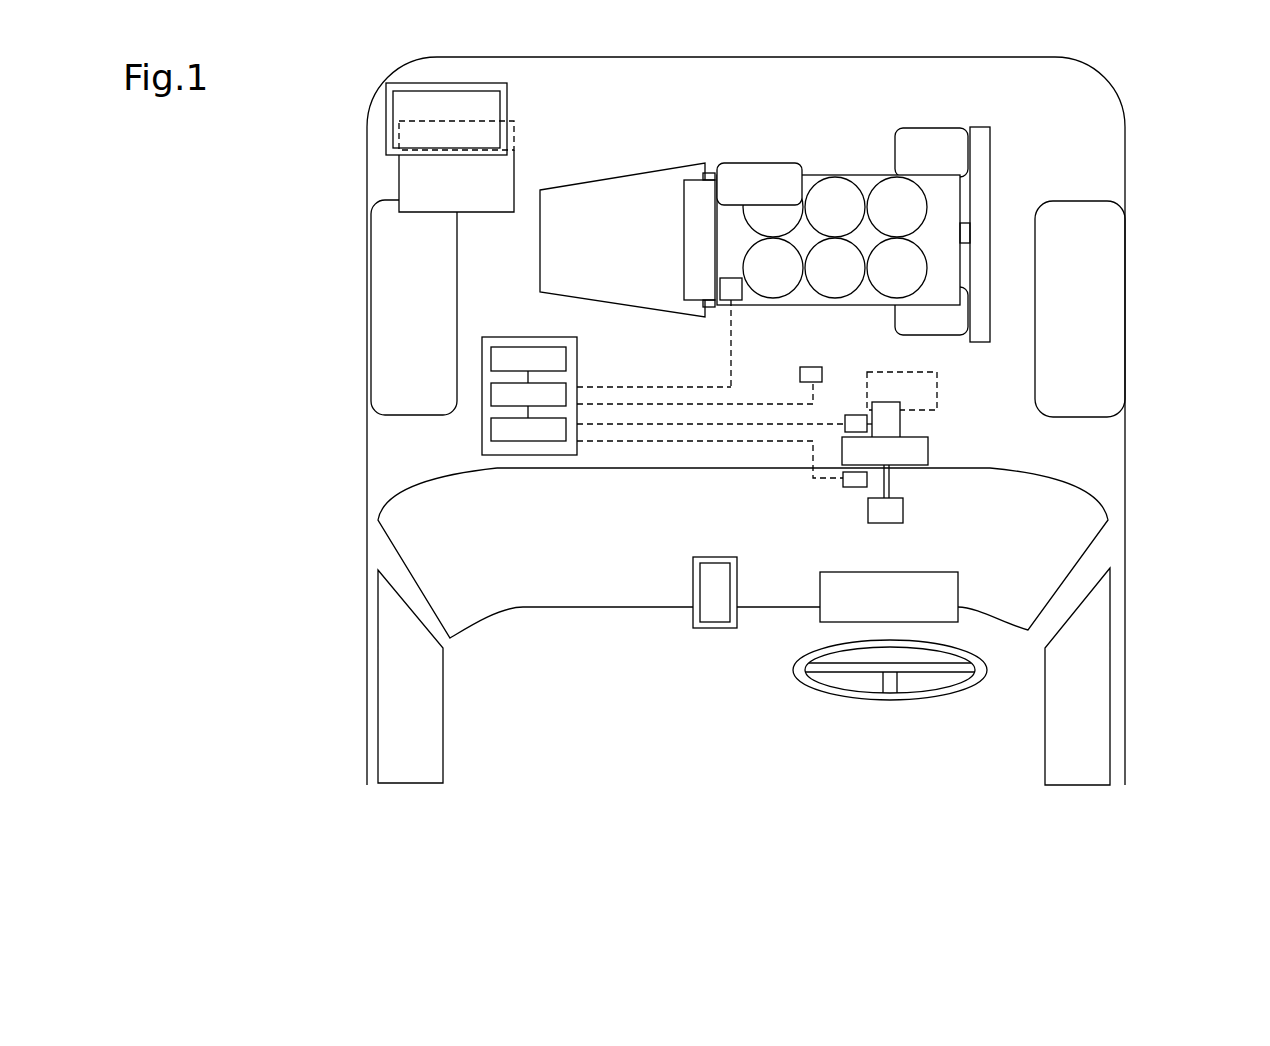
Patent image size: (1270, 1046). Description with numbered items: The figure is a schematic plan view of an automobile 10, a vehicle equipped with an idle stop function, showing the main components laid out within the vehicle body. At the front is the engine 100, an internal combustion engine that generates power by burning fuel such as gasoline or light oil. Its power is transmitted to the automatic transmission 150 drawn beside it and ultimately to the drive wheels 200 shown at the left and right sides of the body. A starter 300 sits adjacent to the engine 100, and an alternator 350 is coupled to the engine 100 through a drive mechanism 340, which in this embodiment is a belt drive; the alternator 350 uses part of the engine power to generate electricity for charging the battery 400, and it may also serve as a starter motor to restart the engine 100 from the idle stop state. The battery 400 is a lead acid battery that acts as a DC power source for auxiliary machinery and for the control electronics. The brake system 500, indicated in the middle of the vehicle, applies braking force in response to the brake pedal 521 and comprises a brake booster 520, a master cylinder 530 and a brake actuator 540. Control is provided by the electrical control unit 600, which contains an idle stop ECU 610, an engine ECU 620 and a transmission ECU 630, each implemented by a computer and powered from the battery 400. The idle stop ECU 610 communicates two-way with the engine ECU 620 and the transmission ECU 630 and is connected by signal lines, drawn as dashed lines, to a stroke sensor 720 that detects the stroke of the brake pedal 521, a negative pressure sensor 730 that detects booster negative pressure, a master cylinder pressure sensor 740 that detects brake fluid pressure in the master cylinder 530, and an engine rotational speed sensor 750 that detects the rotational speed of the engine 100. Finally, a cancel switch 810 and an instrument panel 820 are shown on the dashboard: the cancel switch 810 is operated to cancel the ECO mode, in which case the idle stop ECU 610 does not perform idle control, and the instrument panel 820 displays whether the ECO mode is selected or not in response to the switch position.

The automobile 10 is at (1147, 68).
The engine 100 is at (836, 205).
The automatic transmission 150 is at (615, 205).
The drive wheels 200 is at (404, 250).
The starter 300 is at (757, 175).
The drive mechanism 340 is at (977, 170).
The alternator 350 is at (928, 147).
The battery 400 is at (412, 176).
The brake system 500 is at (936, 430).
The brake booster 520 is at (893, 452).
The brake pedal 521 is at (893, 512).
The master cylinder 530 is at (890, 423).
The brake actuator 540 is at (897, 372).
The electrical control unit 600 is at (554, 375).
The idle stop ECU 610 is at (491, 392).
The engine ECU 620 is at (491, 355).
The transmission ECU 630 is at (491, 428).
The stroke sensor 720 is at (853, 490).
The negative pressure sensor 730 is at (810, 367).
The master cylinder pressure sensor 740 is at (855, 415).
The engine rotational speed sensor 750 is at (733, 292).
The cancel switch 810 is at (717, 610).
The instrument panel 820 is at (945, 588).